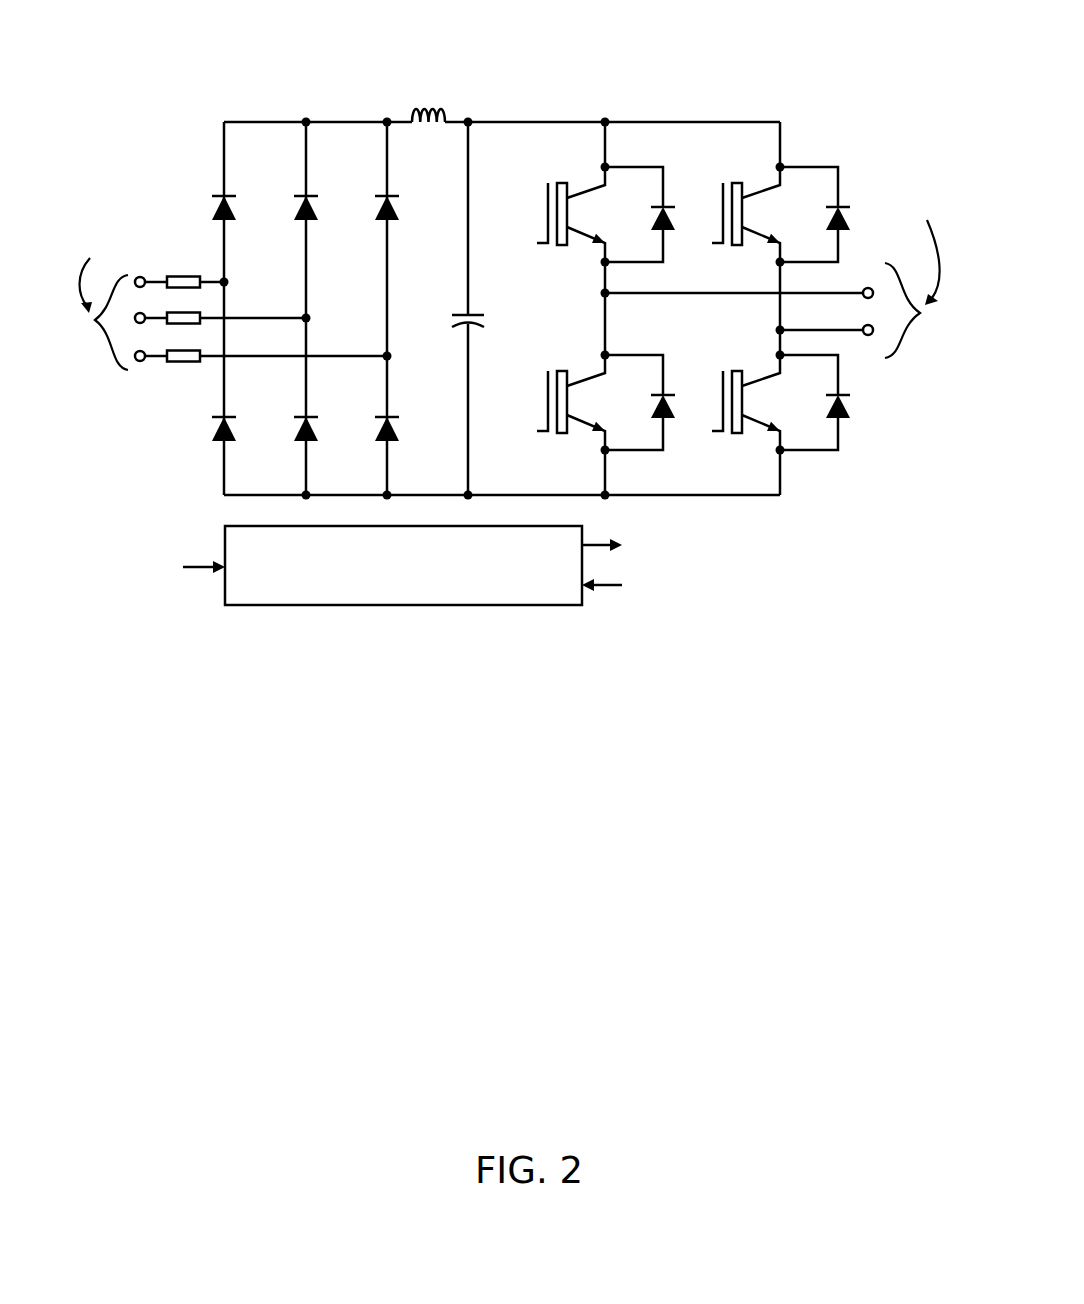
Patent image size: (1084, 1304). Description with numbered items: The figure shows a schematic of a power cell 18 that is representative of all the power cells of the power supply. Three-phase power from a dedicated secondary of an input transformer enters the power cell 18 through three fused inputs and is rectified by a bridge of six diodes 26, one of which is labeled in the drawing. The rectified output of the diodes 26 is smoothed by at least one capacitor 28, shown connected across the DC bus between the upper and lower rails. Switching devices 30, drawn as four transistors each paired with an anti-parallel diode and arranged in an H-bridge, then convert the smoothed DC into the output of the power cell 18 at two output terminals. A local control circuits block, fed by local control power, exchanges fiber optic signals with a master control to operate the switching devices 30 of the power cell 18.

The power cell 18 is at (752, 46).
The diodes 26 is at (399, 207).
The capacitor 28 is at (478, 312).
The switching devices 30 is at (552, 367).